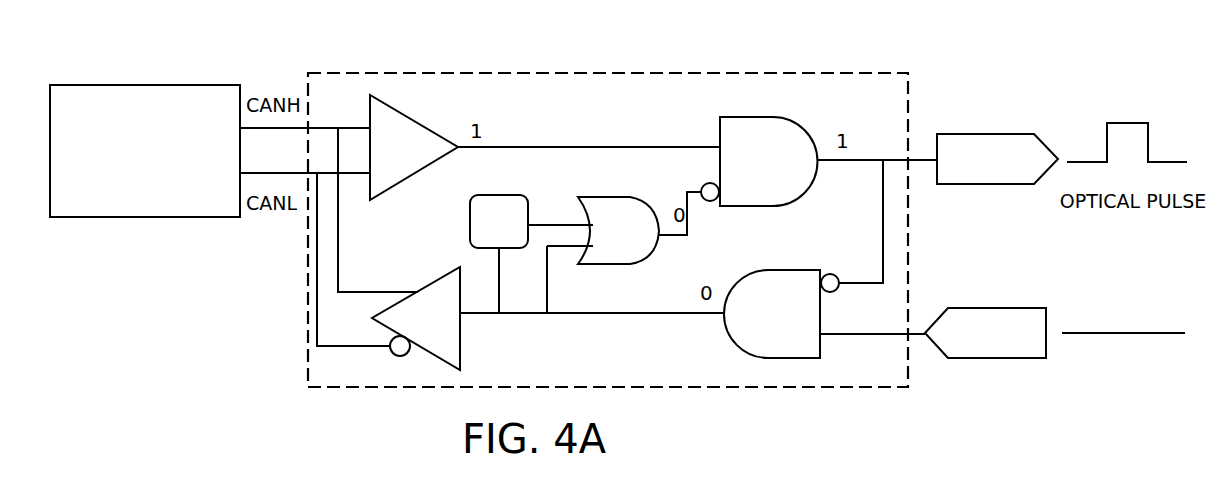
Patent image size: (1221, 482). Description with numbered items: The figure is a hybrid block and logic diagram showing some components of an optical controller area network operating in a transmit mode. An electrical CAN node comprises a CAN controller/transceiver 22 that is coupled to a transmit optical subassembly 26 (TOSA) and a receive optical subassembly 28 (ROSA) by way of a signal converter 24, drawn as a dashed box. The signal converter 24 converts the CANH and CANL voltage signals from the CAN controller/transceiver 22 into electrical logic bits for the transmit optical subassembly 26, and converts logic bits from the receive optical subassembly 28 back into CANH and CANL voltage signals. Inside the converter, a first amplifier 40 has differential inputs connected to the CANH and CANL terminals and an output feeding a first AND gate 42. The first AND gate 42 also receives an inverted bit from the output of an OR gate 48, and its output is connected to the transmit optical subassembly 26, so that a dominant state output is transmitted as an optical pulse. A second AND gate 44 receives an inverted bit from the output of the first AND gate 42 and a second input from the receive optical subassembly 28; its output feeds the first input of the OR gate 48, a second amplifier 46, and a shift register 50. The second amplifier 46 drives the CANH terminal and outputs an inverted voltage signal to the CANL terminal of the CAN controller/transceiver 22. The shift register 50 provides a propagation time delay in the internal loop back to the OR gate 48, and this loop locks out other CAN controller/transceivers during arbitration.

The CAN controller/transceiver 22 is at (48, 110).
The signal converter 24 is at (497, 66).
The transmit optical subassembly 26 is at (1008, 133).
The receive optical subassembly 28 is at (1013, 360).
The first amplifier 40 is at (418, 120).
The first AND gate 42 is at (786, 122).
The second AND gate 44 is at (787, 268).
The second amplifier 46 is at (437, 282).
The OR gate 48 is at (637, 266).
The shift register 50 is at (469, 220).